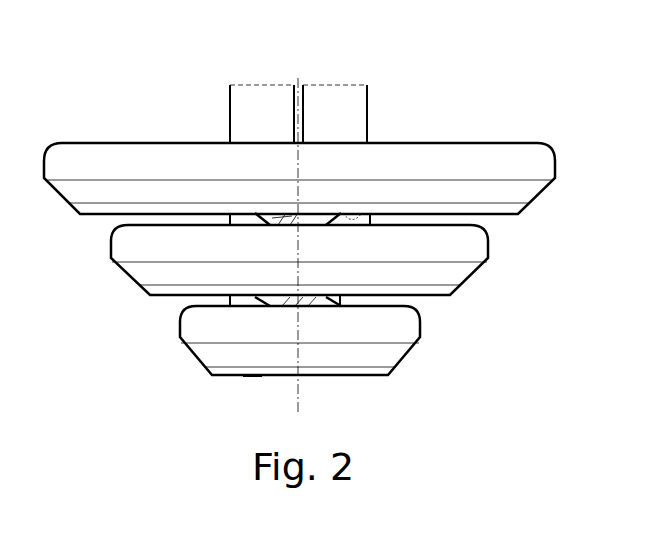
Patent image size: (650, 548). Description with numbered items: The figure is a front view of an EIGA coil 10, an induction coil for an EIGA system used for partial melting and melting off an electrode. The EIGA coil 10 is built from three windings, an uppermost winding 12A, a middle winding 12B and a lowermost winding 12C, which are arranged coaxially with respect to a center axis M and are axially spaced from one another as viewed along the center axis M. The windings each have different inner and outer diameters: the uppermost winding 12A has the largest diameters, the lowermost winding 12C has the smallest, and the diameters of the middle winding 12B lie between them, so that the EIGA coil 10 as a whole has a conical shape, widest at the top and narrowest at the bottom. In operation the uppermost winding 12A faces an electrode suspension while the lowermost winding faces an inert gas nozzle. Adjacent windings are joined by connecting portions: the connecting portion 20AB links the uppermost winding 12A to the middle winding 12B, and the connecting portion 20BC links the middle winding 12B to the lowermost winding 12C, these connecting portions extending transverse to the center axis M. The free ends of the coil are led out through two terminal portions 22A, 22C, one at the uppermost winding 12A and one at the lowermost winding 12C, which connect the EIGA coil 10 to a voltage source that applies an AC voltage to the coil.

The EIGA coil 10 is at (146, 68).
The uppermost winding 12A is at (422, 168).
The middle winding 12B is at (442, 245).
The lowermost winding 12C is at (400, 332).
The connecting portion 20AB is at (288, 223).
The connecting portion 20BC is at (288, 300).
The terminal portion 22A is at (338, 107).
The terminal portion 22C is at (252, 100).
The center axis M is at (300, 387).